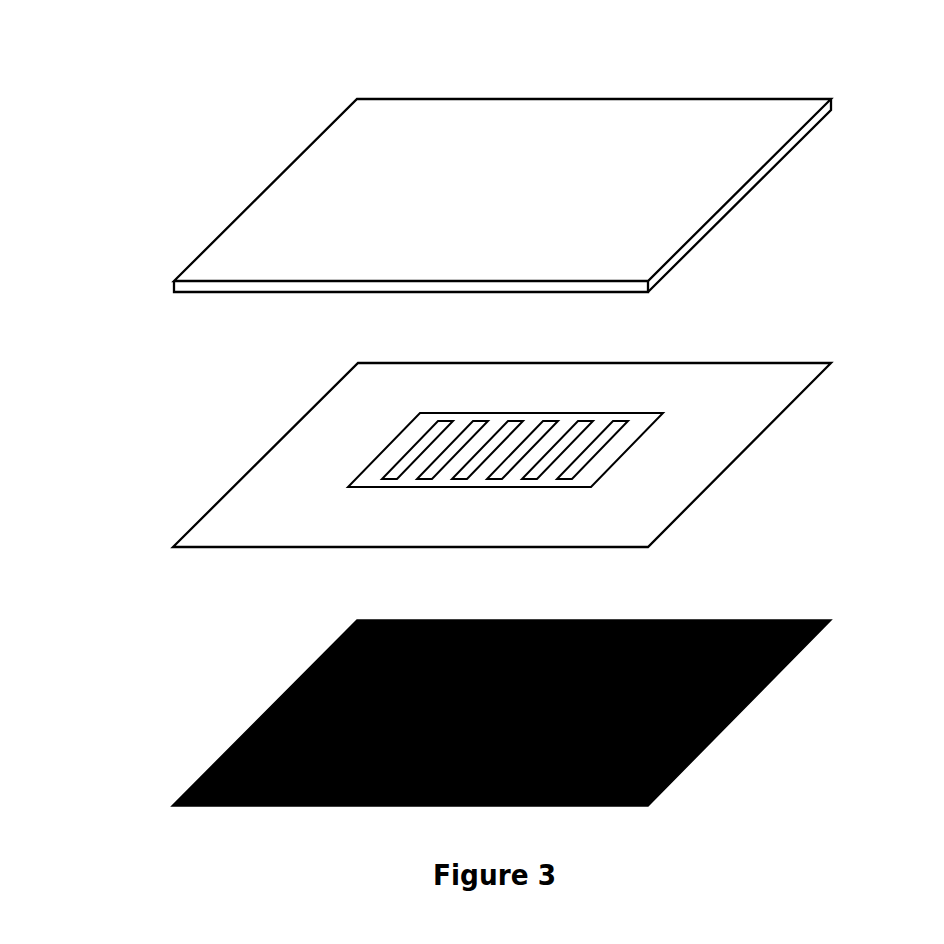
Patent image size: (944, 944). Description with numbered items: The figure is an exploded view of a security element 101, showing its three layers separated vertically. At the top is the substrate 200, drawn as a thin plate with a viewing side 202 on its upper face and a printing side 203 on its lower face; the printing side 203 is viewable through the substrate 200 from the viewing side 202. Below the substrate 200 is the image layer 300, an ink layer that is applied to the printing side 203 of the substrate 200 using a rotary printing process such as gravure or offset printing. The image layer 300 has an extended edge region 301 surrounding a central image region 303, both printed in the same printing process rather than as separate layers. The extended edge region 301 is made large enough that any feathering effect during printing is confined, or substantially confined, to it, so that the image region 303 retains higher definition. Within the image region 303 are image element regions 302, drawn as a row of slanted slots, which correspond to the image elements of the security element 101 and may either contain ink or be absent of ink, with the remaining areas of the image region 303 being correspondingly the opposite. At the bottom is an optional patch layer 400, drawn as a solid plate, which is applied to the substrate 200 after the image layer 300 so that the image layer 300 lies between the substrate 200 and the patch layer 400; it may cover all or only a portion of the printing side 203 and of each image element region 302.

The security element 101 is at (142, 272).
The substrate 200 is at (273, 165).
The viewing side 202 is at (541, 100).
The printing side 203 is at (191, 297).
The image layer 300 is at (202, 480).
The extended edge region 301 is at (704, 457).
The image element regions 302 is at (555, 470).
The image region 303 is at (630, 405).
The patch layer 400 is at (228, 719).